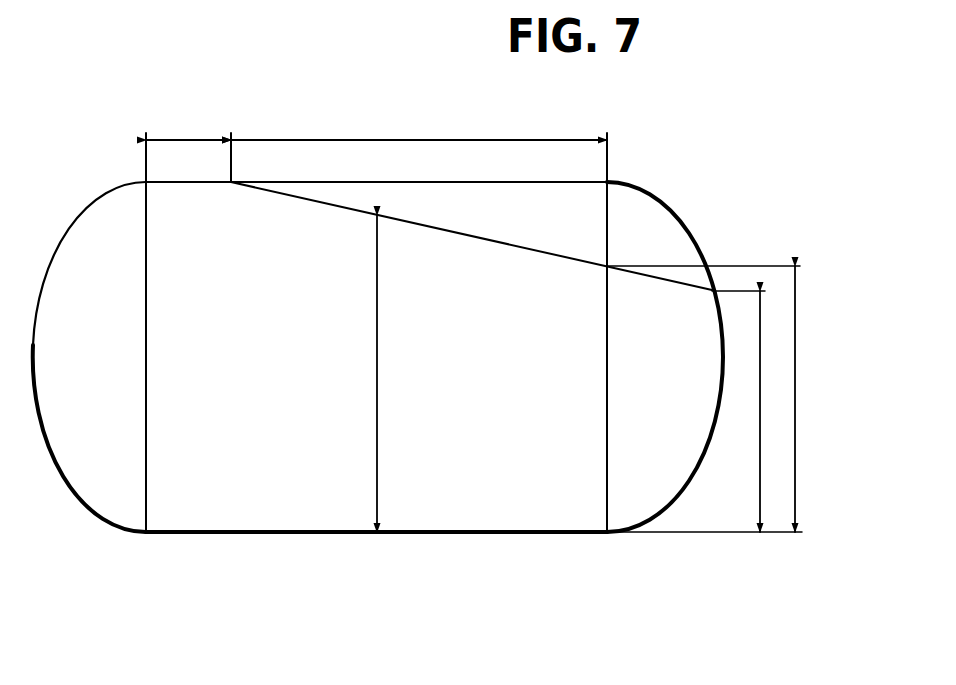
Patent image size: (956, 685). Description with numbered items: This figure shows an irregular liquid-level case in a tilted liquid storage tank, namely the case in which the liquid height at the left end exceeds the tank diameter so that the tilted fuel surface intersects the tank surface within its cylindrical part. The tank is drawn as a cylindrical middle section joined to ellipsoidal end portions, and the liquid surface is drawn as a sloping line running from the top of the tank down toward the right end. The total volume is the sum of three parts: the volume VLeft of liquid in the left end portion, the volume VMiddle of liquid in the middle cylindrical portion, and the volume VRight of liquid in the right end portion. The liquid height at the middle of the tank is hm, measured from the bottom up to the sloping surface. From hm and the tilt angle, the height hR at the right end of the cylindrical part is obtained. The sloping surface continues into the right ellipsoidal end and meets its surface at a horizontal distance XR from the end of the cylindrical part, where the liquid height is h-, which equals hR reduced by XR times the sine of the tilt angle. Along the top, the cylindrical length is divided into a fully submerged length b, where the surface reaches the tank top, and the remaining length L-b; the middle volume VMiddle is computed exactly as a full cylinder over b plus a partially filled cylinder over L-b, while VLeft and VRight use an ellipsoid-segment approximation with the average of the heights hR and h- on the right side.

The fully submerged length b is at (191, 140).
The remaining cylindrical length L-b is at (422, 140).
The liquid height at middle of tank hm is at (378, 418).
The right intersection distance XR is at (663, 280).
The liquid height at right intersection h- is at (760, 389).
The liquid height at right end of cylindrical part hR is at (795, 413).
The left end volume VLeft is at (112, 495).
The middle volume VMiddle is at (300, 500).
The right end volume VRight is at (649, 495).